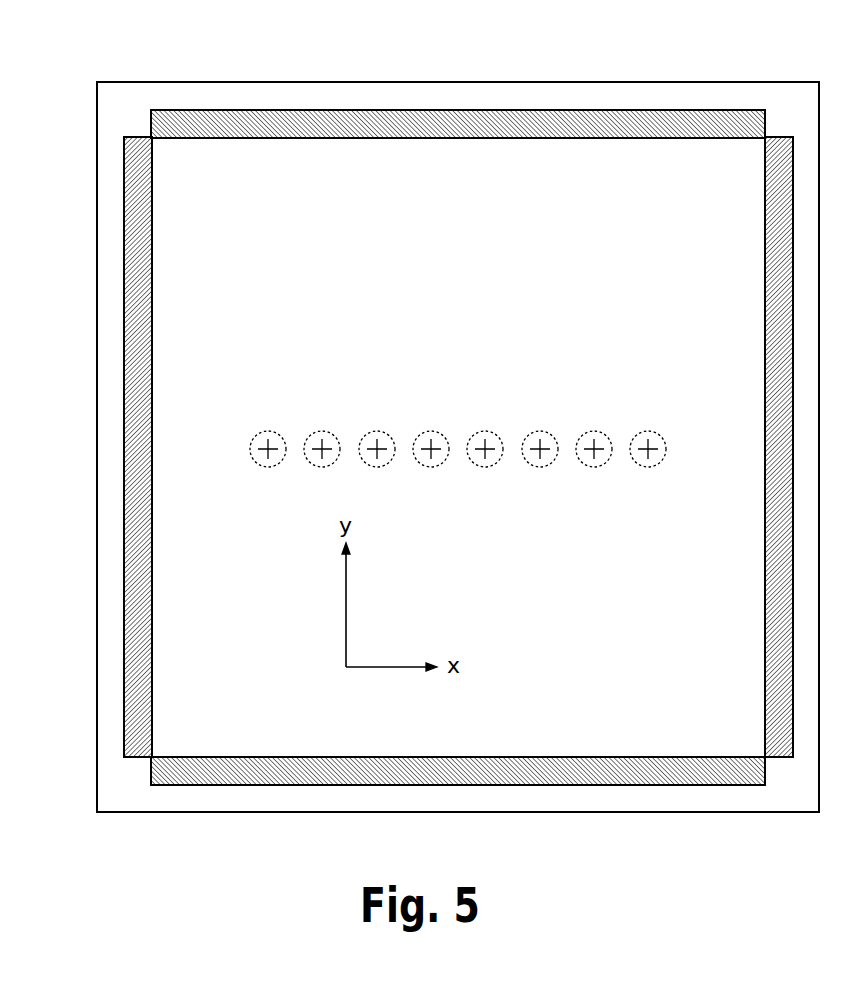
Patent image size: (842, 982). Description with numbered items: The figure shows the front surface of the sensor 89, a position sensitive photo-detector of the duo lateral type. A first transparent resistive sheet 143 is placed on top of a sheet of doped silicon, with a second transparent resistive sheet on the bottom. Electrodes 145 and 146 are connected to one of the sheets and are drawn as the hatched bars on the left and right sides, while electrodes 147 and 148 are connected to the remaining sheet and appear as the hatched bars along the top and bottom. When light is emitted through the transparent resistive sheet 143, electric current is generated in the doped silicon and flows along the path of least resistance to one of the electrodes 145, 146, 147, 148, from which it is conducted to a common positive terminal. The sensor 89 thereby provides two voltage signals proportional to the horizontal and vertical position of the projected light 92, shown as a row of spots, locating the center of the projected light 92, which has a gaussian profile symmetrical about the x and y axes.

The sensor 89 is at (368, 82).
The first transparent resistive sheet 143 is at (652, 163).
The electrode 145 is at (152, 283).
The electrode 146 is at (765, 593).
The electrode 147 is at (477, 139).
The electrode 148 is at (513, 757).
The projected light 92 is at (260, 462).